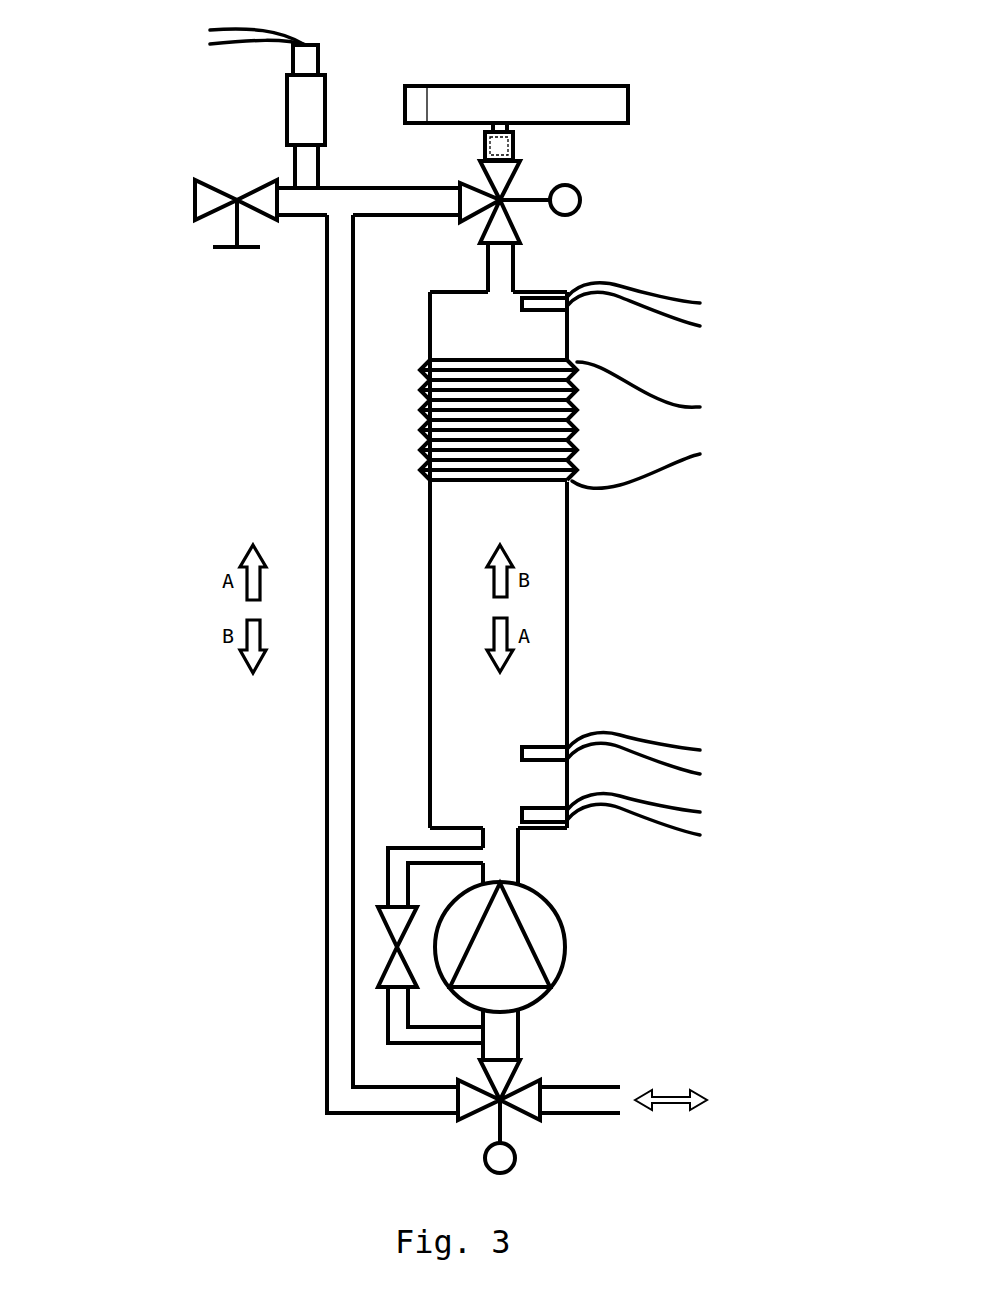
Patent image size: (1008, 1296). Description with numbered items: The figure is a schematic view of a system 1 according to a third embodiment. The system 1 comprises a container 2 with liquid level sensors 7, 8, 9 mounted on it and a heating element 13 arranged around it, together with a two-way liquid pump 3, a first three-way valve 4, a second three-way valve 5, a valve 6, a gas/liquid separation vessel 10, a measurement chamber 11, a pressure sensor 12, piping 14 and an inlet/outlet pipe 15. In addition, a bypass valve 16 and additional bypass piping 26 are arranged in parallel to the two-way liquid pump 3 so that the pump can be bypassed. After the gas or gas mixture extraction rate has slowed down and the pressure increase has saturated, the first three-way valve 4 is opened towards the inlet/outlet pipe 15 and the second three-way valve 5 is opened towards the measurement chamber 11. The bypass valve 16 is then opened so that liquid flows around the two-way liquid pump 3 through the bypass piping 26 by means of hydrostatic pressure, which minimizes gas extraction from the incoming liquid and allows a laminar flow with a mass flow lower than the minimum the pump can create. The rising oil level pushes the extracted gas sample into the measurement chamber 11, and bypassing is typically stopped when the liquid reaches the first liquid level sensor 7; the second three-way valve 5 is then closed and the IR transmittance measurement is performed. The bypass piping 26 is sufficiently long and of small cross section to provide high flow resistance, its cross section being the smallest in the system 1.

The system 1 is at (622, 653).
The container 2 is at (567, 584).
The two-way liquid pump 3 is at (565, 928).
The first three-way valve 4 is at (502, 1098).
The second three-way valve 5 is at (503, 205).
The valve 6 is at (237, 200).
The first liquid level sensor 7 is at (567, 305).
The second liquid level sensor 8 is at (545, 752).
The third liquid level sensor 9 is at (555, 815).
The gas/liquid separation vessel 10 is at (513, 145).
The measurement chamber 11 is at (608, 110).
The pressure sensor 12 is at (287, 113).
The heating element 13 is at (577, 410).
The piping 14 is at (327, 432).
The inlet/outlet pipe 15 is at (587, 1107).
The bypass valve 16 is at (397, 947).
The bypass piping 26 is at (408, 845).